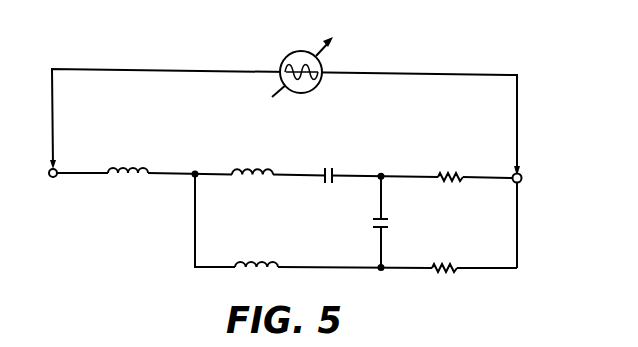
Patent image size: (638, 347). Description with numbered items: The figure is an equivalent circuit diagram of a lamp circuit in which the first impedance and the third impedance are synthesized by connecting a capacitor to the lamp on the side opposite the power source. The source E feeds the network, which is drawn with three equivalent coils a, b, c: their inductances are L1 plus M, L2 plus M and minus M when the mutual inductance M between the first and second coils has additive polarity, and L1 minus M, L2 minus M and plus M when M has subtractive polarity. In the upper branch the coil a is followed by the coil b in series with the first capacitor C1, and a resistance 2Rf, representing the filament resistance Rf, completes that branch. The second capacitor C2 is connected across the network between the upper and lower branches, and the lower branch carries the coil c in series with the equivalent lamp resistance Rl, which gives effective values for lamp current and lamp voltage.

The AC voltage source E is at (302, 61).
The coil a is at (128, 159).
The coil b is at (252, 161).
The coil c is at (256, 253).
The first capacitor C1 is at (329, 167).
The second capacitor C2 is at (391, 221).
The filament resistance 2Rf is at (449, 165).
The equivalent lamp resistance Rl is at (444, 258).